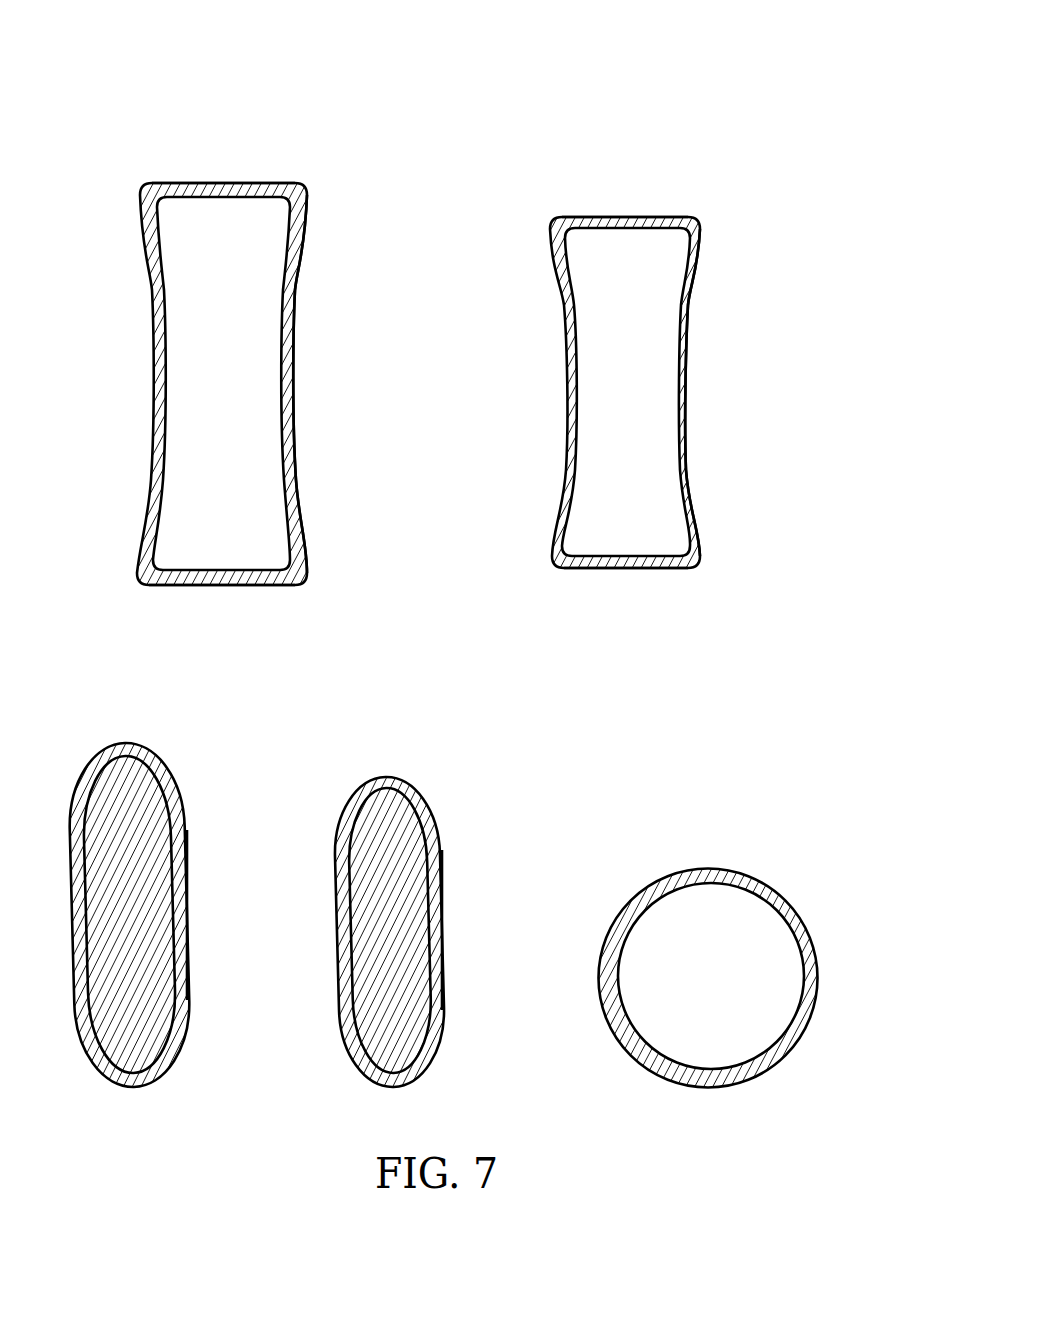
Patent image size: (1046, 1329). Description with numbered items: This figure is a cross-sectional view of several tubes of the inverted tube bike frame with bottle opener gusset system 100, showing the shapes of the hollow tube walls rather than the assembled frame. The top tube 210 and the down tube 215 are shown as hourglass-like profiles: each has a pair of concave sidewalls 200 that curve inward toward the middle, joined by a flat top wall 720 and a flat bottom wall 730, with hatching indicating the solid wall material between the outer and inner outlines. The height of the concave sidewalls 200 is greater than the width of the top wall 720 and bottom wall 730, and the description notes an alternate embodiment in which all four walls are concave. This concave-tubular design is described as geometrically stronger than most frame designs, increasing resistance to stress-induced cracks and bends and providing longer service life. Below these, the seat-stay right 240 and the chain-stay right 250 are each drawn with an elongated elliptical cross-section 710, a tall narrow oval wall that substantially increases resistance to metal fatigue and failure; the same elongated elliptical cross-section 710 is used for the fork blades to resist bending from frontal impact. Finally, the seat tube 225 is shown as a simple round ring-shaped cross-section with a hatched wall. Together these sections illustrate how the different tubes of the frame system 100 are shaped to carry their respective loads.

The inverted tube bike frame with bottle opener gusset system 100 is at (665, 60).
The concave sidewalls 200 is at (294, 370).
The top tube 210 is at (240, 183).
The down tube 215 is at (640, 217).
The seat tube 225 is at (697, 870).
The seat-stay right 240 is at (128, 743).
The chain-stay right 250 is at (385, 777).
The elongated elliptical cross-sections 710 is at (187, 893).
The top wall 720 is at (198, 183).
The bottom wall 730 is at (228, 586).